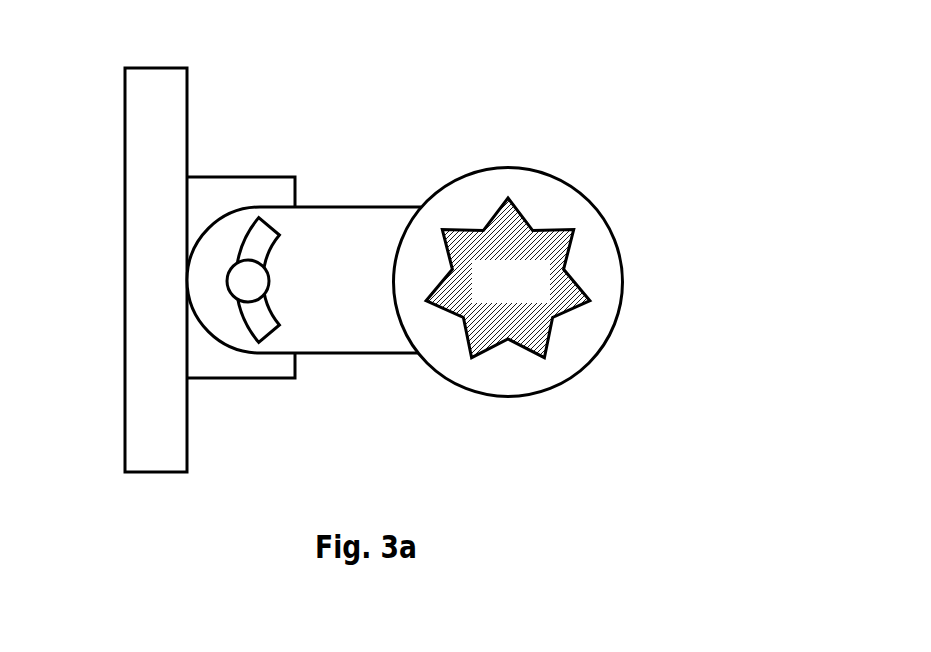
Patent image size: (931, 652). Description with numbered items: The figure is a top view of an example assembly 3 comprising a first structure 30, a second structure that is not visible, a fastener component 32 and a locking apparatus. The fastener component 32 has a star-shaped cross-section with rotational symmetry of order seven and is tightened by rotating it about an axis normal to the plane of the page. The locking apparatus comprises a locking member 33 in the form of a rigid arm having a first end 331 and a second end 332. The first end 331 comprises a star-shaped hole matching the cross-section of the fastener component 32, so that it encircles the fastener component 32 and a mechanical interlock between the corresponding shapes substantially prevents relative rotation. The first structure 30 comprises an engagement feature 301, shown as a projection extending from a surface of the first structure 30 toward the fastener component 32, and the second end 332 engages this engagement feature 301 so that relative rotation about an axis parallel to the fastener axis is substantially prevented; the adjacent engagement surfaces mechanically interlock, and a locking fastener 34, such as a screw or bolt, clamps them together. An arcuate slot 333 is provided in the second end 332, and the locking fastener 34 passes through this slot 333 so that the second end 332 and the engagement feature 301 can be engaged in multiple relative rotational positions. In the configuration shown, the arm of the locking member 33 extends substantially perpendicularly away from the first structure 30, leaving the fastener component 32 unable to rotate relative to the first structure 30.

The assembly 3 is at (416, 79).
The first structure 30 is at (142, 162).
The engagement feature 301 is at (245, 187).
The fastener component 32 is at (508, 278).
The locking member 33 is at (347, 318).
The first end 331 is at (535, 185).
The second end 332 is at (232, 337).
The arcuate slot 333 is at (263, 240).
The locking fastener 34 is at (250, 282).